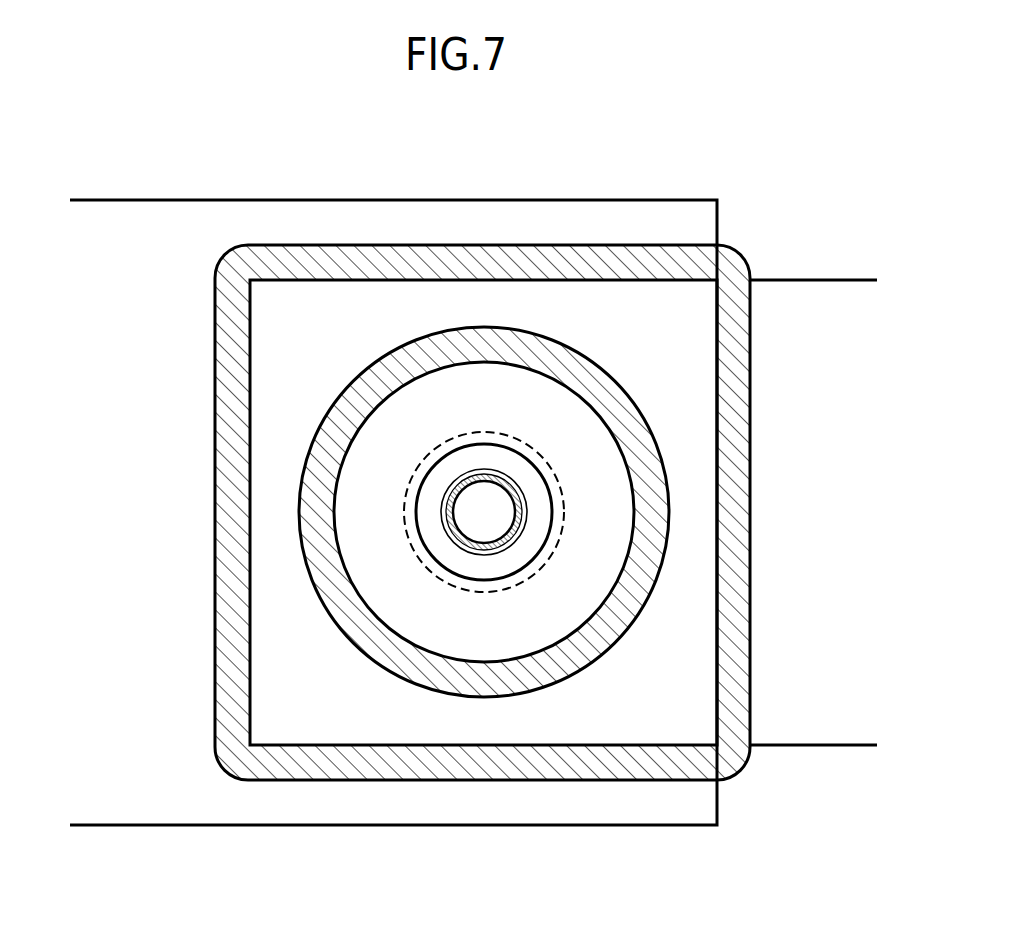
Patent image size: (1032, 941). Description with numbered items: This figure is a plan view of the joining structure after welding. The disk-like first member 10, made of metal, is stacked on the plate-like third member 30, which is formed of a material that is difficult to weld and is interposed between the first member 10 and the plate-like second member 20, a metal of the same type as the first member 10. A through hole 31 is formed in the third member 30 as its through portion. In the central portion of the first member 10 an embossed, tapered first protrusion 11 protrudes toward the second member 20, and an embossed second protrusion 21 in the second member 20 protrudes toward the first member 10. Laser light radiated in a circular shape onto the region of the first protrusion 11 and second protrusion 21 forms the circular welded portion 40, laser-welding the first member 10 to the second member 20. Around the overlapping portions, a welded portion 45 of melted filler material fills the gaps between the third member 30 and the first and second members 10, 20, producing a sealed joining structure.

The first member 10 is at (535, 387).
The first protrusion 11 is at (495, 525).
The second protrusion 21 is at (663, 691).
The second member 20 is at (476, 198).
The third member 30 is at (800, 278).
The through hole 31 is at (535, 453).
The welded portion 40 is at (447, 513).
The welded portion 45 is at (215, 444).